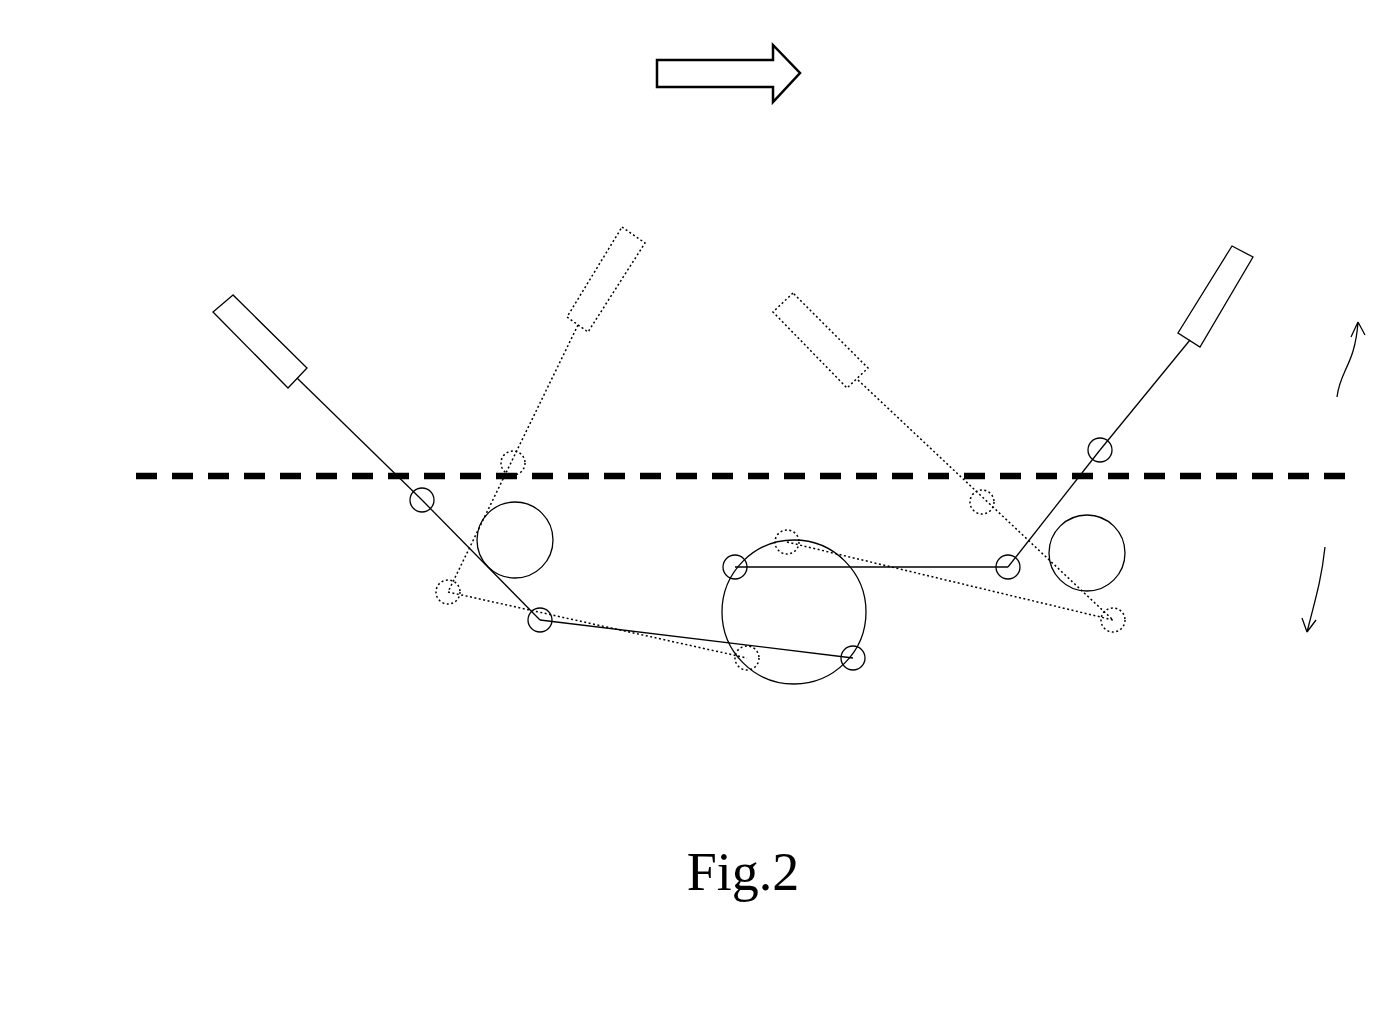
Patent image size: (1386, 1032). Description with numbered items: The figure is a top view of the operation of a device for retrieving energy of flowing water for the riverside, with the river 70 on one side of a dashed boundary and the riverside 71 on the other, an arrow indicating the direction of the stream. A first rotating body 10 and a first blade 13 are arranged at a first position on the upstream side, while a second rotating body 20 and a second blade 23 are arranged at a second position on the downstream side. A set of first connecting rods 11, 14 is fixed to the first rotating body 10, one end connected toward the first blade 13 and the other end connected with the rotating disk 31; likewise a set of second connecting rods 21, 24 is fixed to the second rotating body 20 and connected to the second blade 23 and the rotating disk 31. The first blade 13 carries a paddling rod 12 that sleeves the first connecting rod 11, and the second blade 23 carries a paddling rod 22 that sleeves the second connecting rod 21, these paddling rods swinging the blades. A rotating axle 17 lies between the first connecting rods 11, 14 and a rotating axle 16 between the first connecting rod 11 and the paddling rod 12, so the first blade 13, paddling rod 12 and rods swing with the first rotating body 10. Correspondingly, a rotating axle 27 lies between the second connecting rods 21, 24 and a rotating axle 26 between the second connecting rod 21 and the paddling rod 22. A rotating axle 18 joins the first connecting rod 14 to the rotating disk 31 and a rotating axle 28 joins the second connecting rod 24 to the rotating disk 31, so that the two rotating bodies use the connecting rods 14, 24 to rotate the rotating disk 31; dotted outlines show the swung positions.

The first rotating body 10 is at (557, 538).
The first connecting rod 11 is at (448, 528).
The paddling rod 12 is at (357, 435).
The first blade 13 is at (272, 332).
The first connecting rod 14 is at (643, 633).
The rotating axle 16 is at (413, 500).
The rotating axle 17 is at (540, 633).
The rotating axle 18 is at (860, 667).
The second rotating body 20 is at (1130, 555).
The second connecting rod 21 is at (1060, 498).
The paddling rod 22 is at (1138, 403).
The second blade 23 is at (1243, 250).
The second connecting rod 24 is at (877, 568).
The rotating axle 26 is at (1112, 452).
The rotating axle 27 is at (1008, 578).
The rotating axle 28 is at (737, 553).
The rotating disk 31 is at (795, 683).
The river 70 is at (1345, 382).
The riverside 71 is at (1320, 567).